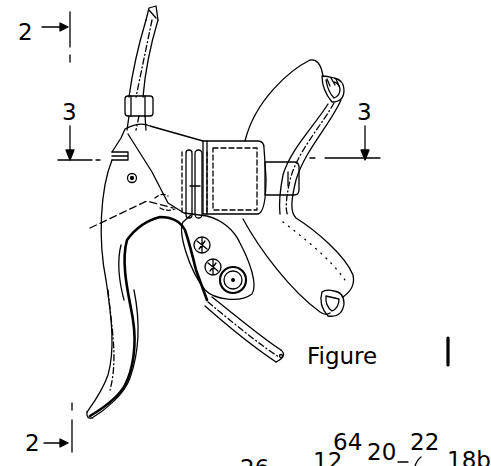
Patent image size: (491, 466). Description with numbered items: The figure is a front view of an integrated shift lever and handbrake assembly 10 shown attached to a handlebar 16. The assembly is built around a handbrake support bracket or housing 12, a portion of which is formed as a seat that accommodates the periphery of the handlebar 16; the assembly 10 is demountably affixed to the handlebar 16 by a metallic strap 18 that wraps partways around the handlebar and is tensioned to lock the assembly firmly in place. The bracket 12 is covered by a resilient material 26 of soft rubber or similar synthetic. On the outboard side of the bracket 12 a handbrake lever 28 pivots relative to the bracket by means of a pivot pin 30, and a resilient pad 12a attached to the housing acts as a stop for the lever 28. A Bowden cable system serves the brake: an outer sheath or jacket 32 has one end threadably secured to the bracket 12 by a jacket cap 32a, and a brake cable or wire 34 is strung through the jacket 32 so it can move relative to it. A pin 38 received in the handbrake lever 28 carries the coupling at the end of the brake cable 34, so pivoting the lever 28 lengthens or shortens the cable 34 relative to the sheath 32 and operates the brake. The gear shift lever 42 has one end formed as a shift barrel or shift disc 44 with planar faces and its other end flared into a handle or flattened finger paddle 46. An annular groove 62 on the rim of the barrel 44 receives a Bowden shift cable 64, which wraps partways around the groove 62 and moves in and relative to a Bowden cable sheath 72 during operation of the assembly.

The integrated shift lever and handbrake assembly 10 is at (176, 272).
The handbrake support bracket or housing 12 is at (208, 222).
The resilient pad 12a is at (110, 157).
The handlebar 16 is at (317, 254).
The metallic strap 18 is at (300, 180).
The resilient material 26 is at (231, 150).
The handbrake lever 28 is at (127, 311).
The pivot pin 30 is at (100, 227).
The outer sheath or jacket 32 is at (147, 52).
The jacket cap 32a is at (150, 108).
The brake cable or wire 34 is at (153, 12).
The pin 38 is at (127, 180).
The gear shift lever 42 is at (191, 229).
The shift barrel or shift disc 44 is at (187, 152).
The handle or flattened finger paddle 46 is at (220, 289).
The annular groove 62 is at (194, 186).
The Bowden shift cable 64 is at (199, 152).
The Bowden cable sheath 72 is at (256, 346).